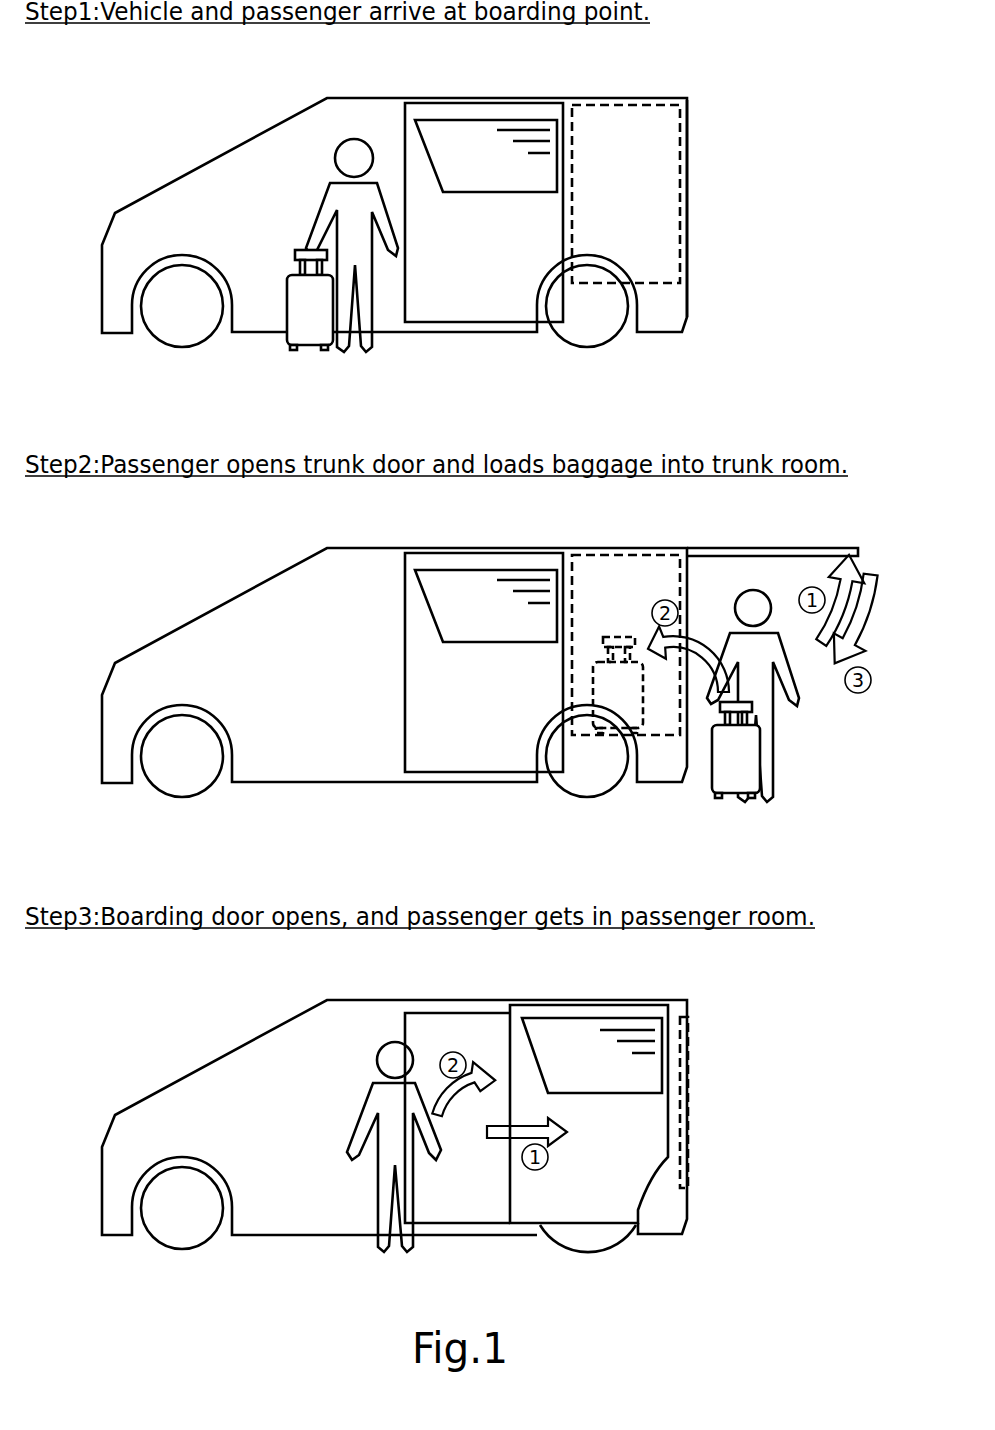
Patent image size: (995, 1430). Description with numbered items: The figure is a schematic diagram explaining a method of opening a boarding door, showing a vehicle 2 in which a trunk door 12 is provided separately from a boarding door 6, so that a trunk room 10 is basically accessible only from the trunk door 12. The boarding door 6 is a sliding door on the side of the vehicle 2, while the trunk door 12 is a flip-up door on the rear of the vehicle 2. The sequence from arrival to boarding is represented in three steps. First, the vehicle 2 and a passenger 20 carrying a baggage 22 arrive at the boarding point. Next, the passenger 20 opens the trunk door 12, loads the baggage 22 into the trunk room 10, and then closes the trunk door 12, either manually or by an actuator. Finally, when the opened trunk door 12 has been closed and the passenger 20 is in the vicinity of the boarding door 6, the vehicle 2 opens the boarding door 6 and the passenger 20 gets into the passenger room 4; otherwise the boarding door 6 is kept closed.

The vehicle 2 is at (178, 188).
The passenger room 4 is at (431, 1033).
The boarding door 6 is at (400, 160).
The trunk room 10 is at (616, 130).
The trunk door 12 is at (690, 163).
The passenger 20 is at (328, 190).
The baggage 22 is at (288, 278).